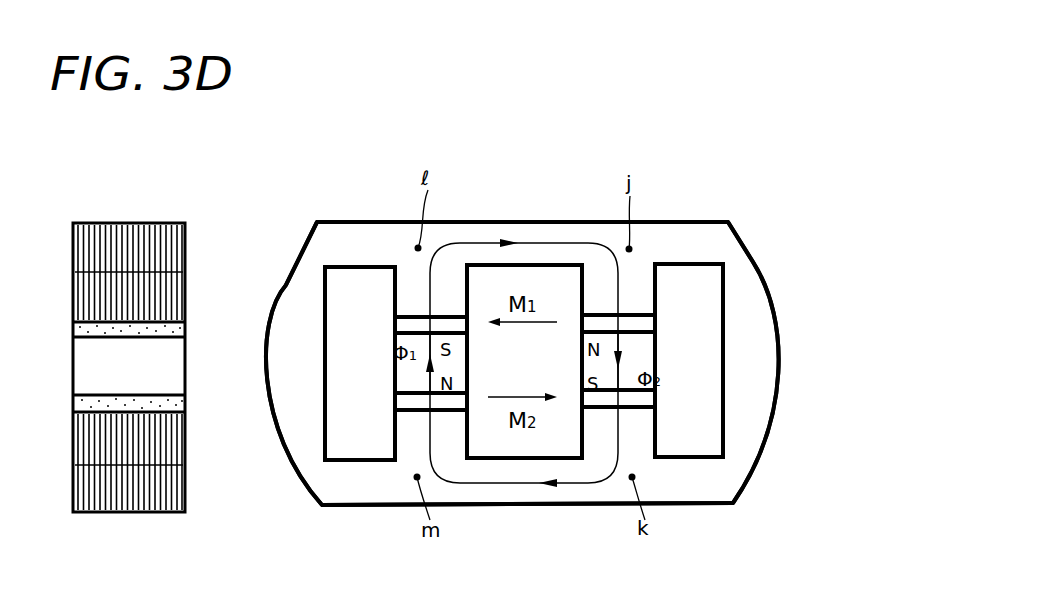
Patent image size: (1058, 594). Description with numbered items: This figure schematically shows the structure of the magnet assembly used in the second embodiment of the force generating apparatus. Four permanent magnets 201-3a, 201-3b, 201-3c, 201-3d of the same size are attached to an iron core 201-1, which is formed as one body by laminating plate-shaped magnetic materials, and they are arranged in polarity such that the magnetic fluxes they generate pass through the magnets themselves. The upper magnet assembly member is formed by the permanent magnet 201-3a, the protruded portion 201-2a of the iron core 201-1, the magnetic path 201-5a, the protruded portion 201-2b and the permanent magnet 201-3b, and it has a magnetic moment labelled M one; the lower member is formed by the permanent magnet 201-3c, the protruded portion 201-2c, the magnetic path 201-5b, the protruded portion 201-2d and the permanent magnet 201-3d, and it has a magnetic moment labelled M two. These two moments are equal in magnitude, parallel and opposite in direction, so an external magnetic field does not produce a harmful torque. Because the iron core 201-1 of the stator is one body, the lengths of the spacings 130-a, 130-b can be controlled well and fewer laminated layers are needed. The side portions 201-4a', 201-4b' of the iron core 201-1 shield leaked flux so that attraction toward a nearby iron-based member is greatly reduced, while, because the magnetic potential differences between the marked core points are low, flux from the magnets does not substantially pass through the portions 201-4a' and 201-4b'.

The iron core 201-1 is at (483, 230).
The protruded portion 201-2a is at (647, 260).
The protruded portion 201-2b is at (410, 288).
The protruded portion 201-2c is at (638, 427).
The protruded portion 201-2d is at (413, 430).
The permanent magnet 201-3a is at (643, 323).
The permanent magnet 201-3b is at (408, 323).
The permanent magnet 201-3c is at (648, 400).
The permanent magnet 201-3d is at (402, 410).
The portion of the iron core 201-4a' is at (804, 362).
The portion of the iron core 201-4b' is at (258, 363).
The magnetic path 201-5a is at (558, 232).
The magnetic path 201-5b is at (528, 493).
The spacing 130-a is at (630, 352).
The spacing 130-b is at (405, 400).